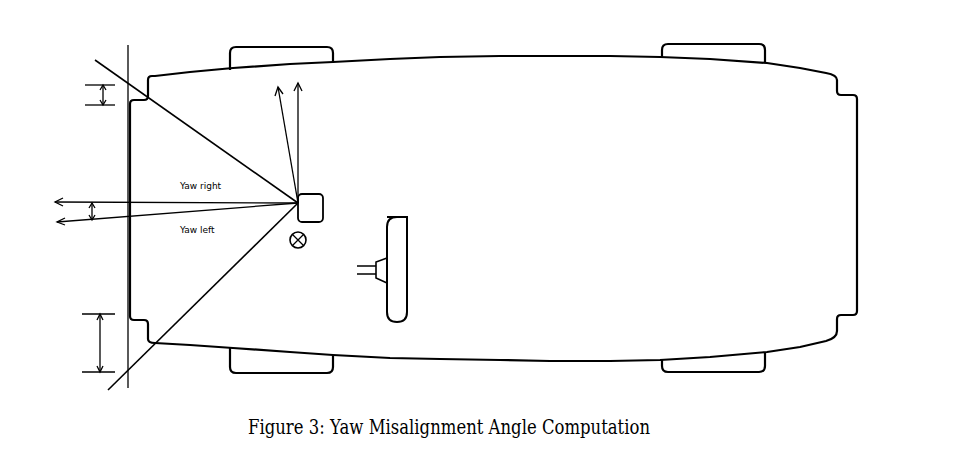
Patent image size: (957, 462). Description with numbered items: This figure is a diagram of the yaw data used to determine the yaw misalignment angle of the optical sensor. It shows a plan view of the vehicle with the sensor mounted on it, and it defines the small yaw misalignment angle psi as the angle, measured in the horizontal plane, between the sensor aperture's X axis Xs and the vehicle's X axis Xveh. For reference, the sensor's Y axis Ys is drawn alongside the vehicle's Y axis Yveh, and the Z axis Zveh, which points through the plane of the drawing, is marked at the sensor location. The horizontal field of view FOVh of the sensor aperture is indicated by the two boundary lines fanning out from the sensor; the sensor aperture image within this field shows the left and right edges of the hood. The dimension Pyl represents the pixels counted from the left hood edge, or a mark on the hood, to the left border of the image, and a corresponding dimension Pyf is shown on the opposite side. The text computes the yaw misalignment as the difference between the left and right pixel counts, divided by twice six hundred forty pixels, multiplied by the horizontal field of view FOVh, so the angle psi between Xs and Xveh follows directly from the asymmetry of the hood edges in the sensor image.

The horizontal field of view FOVh is at (181, 223).
The front yaw offset distance Pyf is at (95, 95).
The left hood edge pixel count Pyl is at (96, 343).
The vehicle X axis Xveh is at (172, 194).
The sensor aperture X axis Xs is at (170, 221).
The vehicle Y axis Yveh is at (312, 143).
The sensor Y axis Ys is at (276, 144).
The vehicle/sensor Z axis Zveh is at (310, 252).
The yaw misalignment angle psi is at (86, 224).
The optical sensor is at (332, 197).
The element vehicle is at (493, 208).